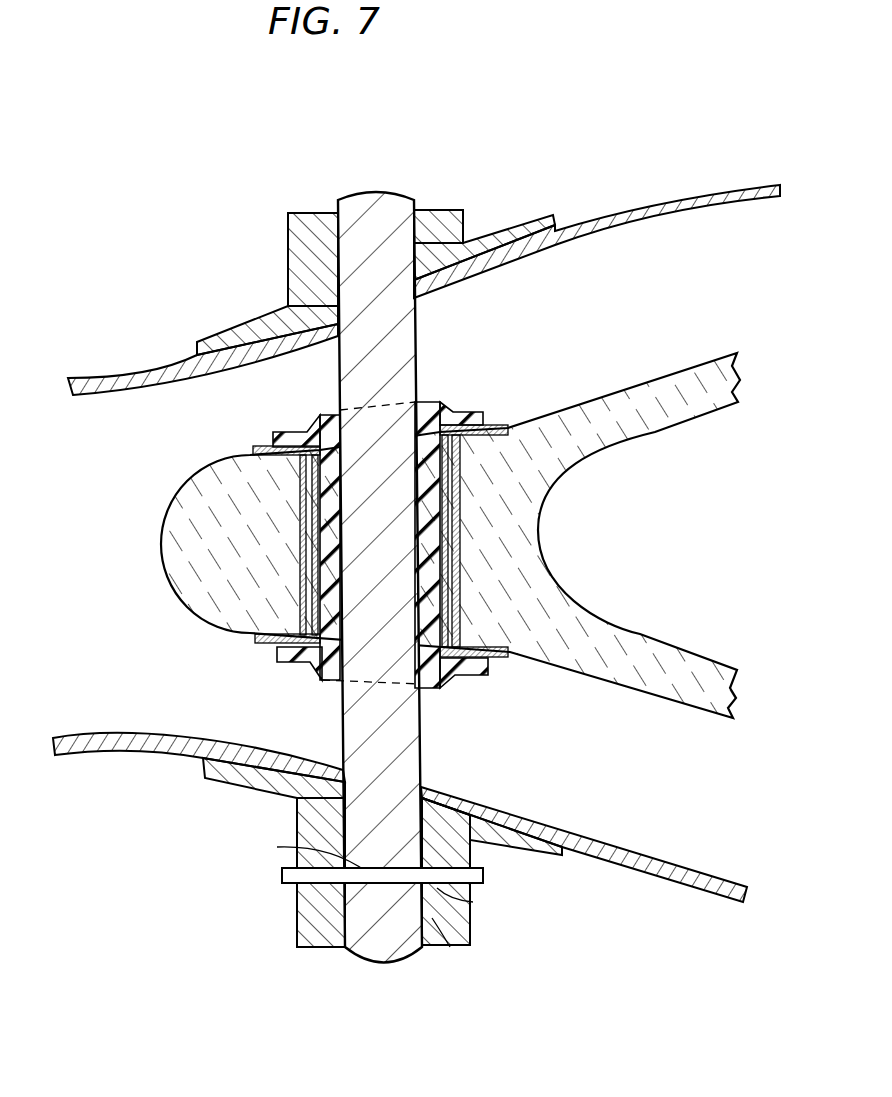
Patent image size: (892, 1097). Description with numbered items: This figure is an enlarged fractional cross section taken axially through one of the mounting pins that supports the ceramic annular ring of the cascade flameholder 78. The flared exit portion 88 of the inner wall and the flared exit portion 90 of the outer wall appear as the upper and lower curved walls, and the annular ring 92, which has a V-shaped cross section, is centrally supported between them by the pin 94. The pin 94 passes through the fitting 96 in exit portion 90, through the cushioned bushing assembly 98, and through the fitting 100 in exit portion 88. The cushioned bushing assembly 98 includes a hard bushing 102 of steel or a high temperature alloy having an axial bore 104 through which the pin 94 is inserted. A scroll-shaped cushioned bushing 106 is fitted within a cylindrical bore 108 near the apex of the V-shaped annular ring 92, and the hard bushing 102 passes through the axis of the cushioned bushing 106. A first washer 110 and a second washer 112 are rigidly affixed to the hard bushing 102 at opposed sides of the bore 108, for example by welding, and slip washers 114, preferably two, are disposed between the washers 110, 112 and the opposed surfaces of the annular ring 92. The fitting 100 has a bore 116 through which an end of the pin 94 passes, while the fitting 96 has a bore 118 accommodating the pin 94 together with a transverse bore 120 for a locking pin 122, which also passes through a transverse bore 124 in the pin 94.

The cascade flameholder 78 is at (626, 160).
The exit portion 88 is at (745, 186).
The exit portion 90 is at (688, 881).
The annular ring 92 is at (688, 373).
The pin 94 is at (416, 338).
The fitting 96 is at (303, 823).
The cushioned bushing assembly 98 is at (308, 670).
The fitting 100 is at (467, 215).
The hard bushing 102 is at (428, 405).
The axial bore 104 is at (338, 412).
The cushioned bushing 106 is at (462, 475).
The cylindrical bore 108 is at (480, 618).
The first washer 110 is at (292, 432).
The second washer 112 is at (284, 664).
The slip washer 114 is at (258, 446).
The bore 116 is at (337, 230).
The bore 118 is at (450, 947).
The transverse bore 120 is at (473, 902).
The locking pin 122 is at (483, 876).
The transverse bore 124 is at (297, 858).